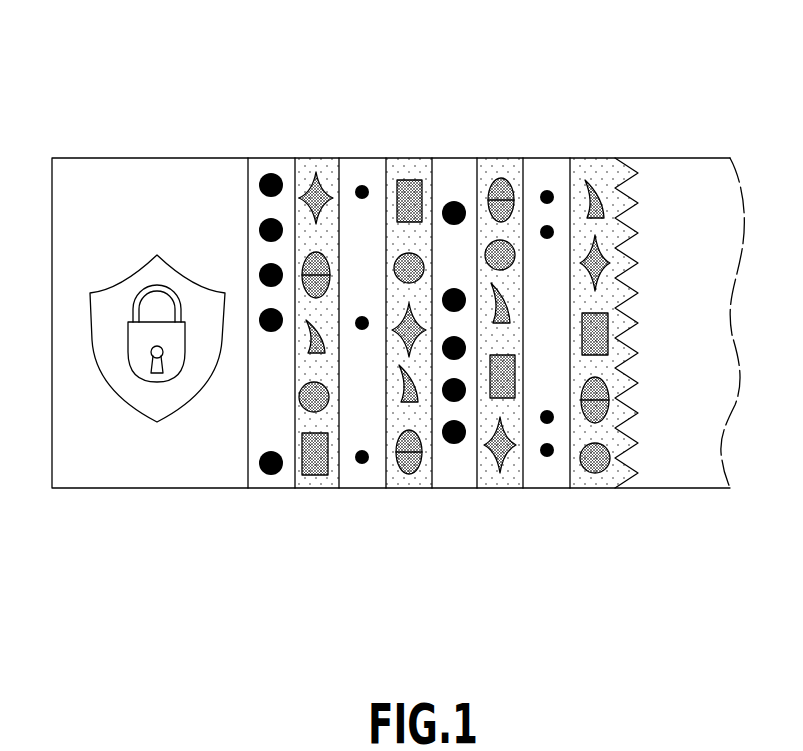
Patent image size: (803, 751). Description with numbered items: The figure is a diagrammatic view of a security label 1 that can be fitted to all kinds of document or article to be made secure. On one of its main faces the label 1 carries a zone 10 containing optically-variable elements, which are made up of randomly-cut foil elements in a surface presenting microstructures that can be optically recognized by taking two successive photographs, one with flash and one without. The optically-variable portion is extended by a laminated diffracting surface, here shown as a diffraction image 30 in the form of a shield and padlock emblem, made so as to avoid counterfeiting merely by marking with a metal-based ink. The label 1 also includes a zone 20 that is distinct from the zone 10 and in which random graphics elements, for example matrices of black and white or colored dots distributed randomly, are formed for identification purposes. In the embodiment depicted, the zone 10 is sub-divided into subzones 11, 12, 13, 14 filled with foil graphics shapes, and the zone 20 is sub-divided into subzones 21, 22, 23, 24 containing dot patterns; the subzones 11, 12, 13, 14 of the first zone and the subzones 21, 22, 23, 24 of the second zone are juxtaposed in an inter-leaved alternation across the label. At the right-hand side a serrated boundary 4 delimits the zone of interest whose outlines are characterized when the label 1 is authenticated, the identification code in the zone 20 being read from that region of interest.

The security label 1 is at (80, 148).
The boundary 4 is at (637, 456).
The zone with optically-variable elements 10 is at (455, 269).
The subzone of the first zone 11 is at (306, 162).
The subzone of the first zone 12 is at (424, 162).
The subzone of the first zone 13 is at (491, 162).
The subzone of the first zone 14 is at (583, 162).
The zone with random graphics elements 20 is at (409, 375).
The subzone of the second zone 21 is at (258, 483).
The subzone of the second zone 22 is at (355, 483).
The subzone of the second zone 23 is at (450, 483).
The subzone of the second zone 24 is at (547, 483).
The diffraction image 30 is at (150, 348).